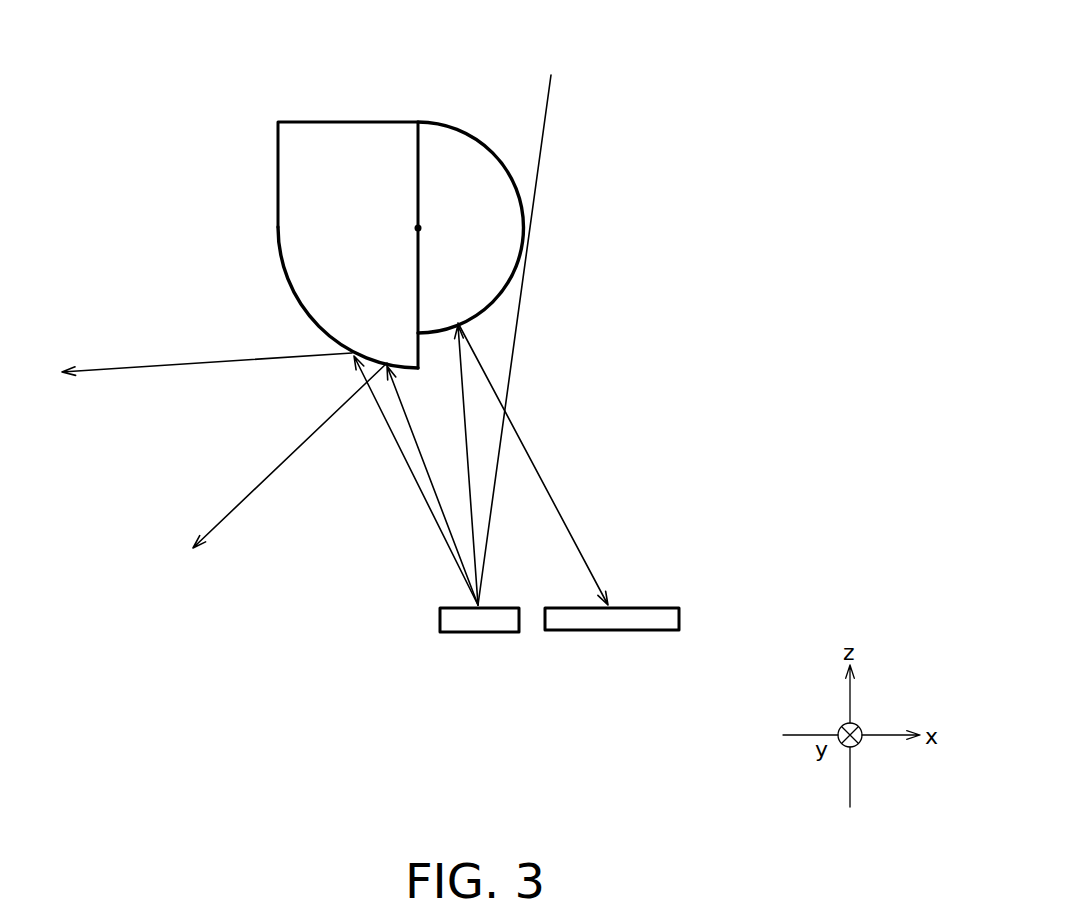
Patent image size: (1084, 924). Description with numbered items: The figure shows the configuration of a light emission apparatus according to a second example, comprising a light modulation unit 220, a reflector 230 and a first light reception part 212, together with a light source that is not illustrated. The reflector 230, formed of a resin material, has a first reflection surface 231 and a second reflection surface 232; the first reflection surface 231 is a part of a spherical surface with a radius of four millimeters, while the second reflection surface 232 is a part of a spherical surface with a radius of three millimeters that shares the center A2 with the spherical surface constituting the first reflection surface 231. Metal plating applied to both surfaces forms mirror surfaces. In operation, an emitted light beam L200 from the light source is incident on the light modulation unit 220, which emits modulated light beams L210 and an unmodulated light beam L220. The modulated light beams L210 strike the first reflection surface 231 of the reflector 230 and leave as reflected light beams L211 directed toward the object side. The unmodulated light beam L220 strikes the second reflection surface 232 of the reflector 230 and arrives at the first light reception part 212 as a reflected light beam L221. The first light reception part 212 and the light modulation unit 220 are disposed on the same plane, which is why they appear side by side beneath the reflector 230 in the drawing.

The reflector 230 is at (351, 206).
The first reflection surface 231 is at (288, 287).
The second reflection surface 232 is at (453, 142).
The center A2 is at (418, 228).
The emitted light beam L200 is at (532, 200).
The modulated light beams L210 is at (400, 453).
The reflected light beams L211 is at (217, 523).
The unmodulated light beam L220 is at (473, 537).
The reflected light beam L221 is at (537, 467).
The light modulation unit 220 is at (488, 627).
The first light reception part 212 is at (608, 622).